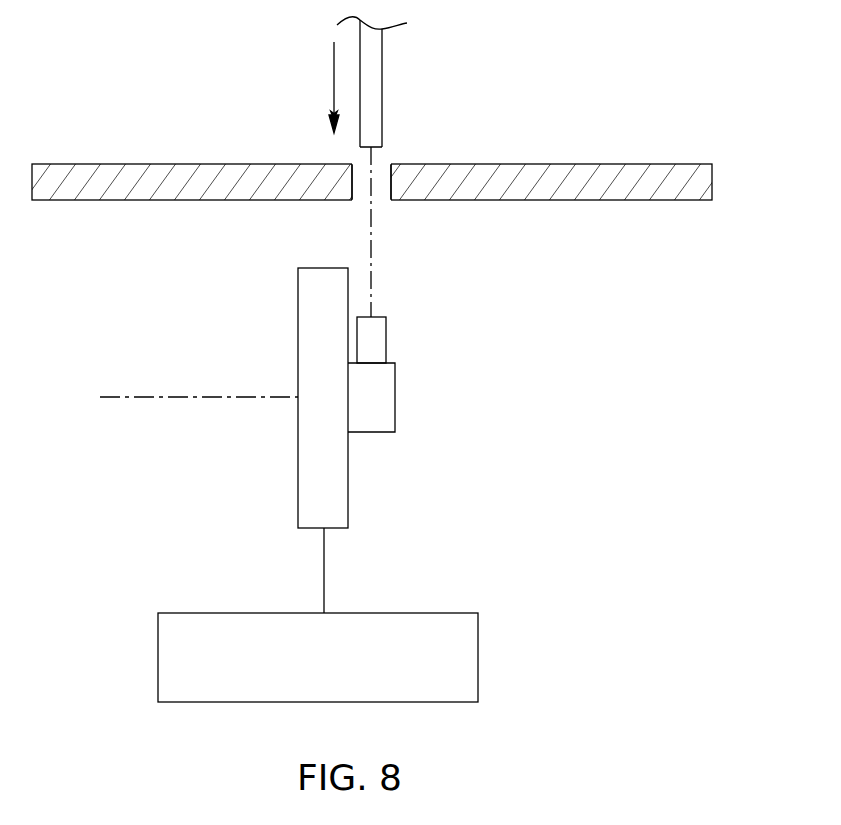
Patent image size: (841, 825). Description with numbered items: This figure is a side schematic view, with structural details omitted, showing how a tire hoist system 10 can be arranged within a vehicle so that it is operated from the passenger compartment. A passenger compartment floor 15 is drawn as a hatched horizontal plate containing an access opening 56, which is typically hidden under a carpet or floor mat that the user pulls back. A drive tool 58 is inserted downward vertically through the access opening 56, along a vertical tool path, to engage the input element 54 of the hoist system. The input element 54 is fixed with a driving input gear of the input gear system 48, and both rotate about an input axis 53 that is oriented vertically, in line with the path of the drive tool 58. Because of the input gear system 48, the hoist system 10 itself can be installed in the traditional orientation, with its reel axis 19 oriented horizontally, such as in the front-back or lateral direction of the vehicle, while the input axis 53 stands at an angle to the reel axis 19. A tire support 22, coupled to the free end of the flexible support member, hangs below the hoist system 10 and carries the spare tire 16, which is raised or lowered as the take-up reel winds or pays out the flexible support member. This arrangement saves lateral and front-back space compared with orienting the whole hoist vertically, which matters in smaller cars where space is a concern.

The tire hoist system 10 is at (292, 462).
The passenger compartment floor 15 is at (518, 180).
The spare tire 16 is at (478, 655).
The reel axis 19 is at (150, 397).
The tire support 22 is at (324, 570).
The input gear system 48 is at (400, 417).
The input axis 53 is at (371, 255).
The input element 54 is at (386, 340).
The access opening 56 is at (378, 177).
The drive tool 58 is at (382, 55).